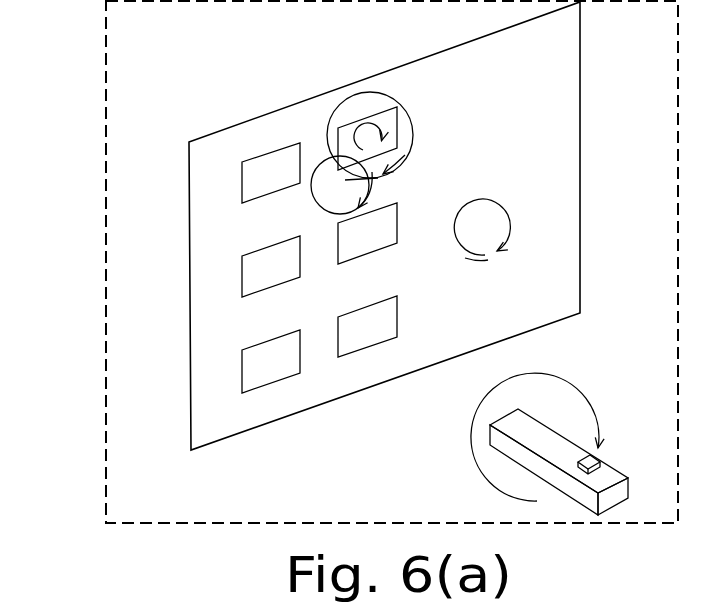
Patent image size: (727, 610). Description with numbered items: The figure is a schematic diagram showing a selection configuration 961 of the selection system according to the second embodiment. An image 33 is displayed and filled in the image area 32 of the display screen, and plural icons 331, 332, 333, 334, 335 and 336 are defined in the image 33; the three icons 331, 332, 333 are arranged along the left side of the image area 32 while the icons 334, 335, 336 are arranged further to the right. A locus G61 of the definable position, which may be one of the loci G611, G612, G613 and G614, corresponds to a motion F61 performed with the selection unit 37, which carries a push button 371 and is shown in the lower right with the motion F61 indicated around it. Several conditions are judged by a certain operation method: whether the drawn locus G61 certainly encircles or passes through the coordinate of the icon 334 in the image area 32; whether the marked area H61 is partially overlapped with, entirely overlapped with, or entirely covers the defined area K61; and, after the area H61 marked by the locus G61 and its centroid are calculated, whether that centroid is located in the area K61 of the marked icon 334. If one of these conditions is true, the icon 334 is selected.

The image area 32 is at (242, 118).
The image 33 is at (557, 173).
The selection configuration 961 is at (106, 206).
The icon 331 is at (242, 180).
The icon 332 is at (242, 274).
The icon 333 is at (242, 370).
The icon 334 is at (348, 126).
The icon 335 is at (338, 247).
The icon 336 is at (378, 345).
The locus G61 is at (273, 102).
The locus G611 is at (380, 92).
The locus G612 is at (310, 208).
The locus G613 is at (390, 155).
The locus G614 is at (490, 200).
The marked area H61 is at (407, 102).
The defined area K61 is at (405, 135).
The motion F61 is at (513, 437).
The selection unit 37 is at (530, 432).
The push button 371 is at (598, 458).